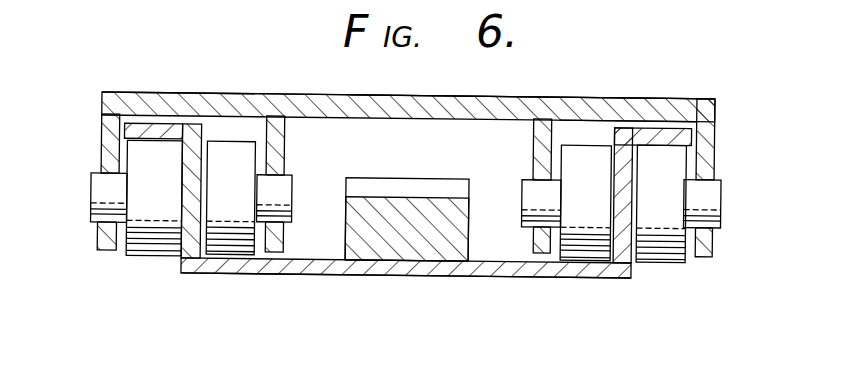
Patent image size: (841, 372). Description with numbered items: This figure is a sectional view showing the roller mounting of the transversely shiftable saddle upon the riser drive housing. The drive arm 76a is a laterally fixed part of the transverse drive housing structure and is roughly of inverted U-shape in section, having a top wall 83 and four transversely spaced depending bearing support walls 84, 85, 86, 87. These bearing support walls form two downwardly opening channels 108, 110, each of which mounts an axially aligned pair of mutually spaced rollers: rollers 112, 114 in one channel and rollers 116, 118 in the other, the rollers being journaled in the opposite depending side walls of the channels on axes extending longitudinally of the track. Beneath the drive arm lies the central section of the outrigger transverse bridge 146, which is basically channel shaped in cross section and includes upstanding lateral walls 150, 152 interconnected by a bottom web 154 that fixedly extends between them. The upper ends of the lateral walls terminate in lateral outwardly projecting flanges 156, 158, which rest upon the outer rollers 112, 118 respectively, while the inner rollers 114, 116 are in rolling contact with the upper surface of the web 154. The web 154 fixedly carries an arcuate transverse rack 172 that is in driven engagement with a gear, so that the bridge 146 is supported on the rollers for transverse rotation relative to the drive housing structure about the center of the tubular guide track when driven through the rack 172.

The drive arm 76a is at (431, 91).
The top wall 83 is at (321, 92).
The bearing support wall 84 is at (101, 148).
The bearing support wall 85 is at (283, 158).
The bearing support wall 86 is at (534, 134).
The bearing support wall 87 is at (708, 143).
The channel 108 is at (220, 118).
The channel 110 is at (602, 115).
The roller 112 is at (147, 255).
The roller 114 is at (243, 252).
The roller 116 is at (595, 254).
The roller 118 is at (677, 253).
The outrigger transverse bridge 146 is at (195, 301).
The lateral wall 150 is at (198, 199).
The lateral wall 152 is at (630, 199).
The bottom web 154 is at (517, 275).
The flange 156 is at (143, 124).
The flange 158 is at (663, 126).
The arcuate transverse rack 172 is at (422, 148).